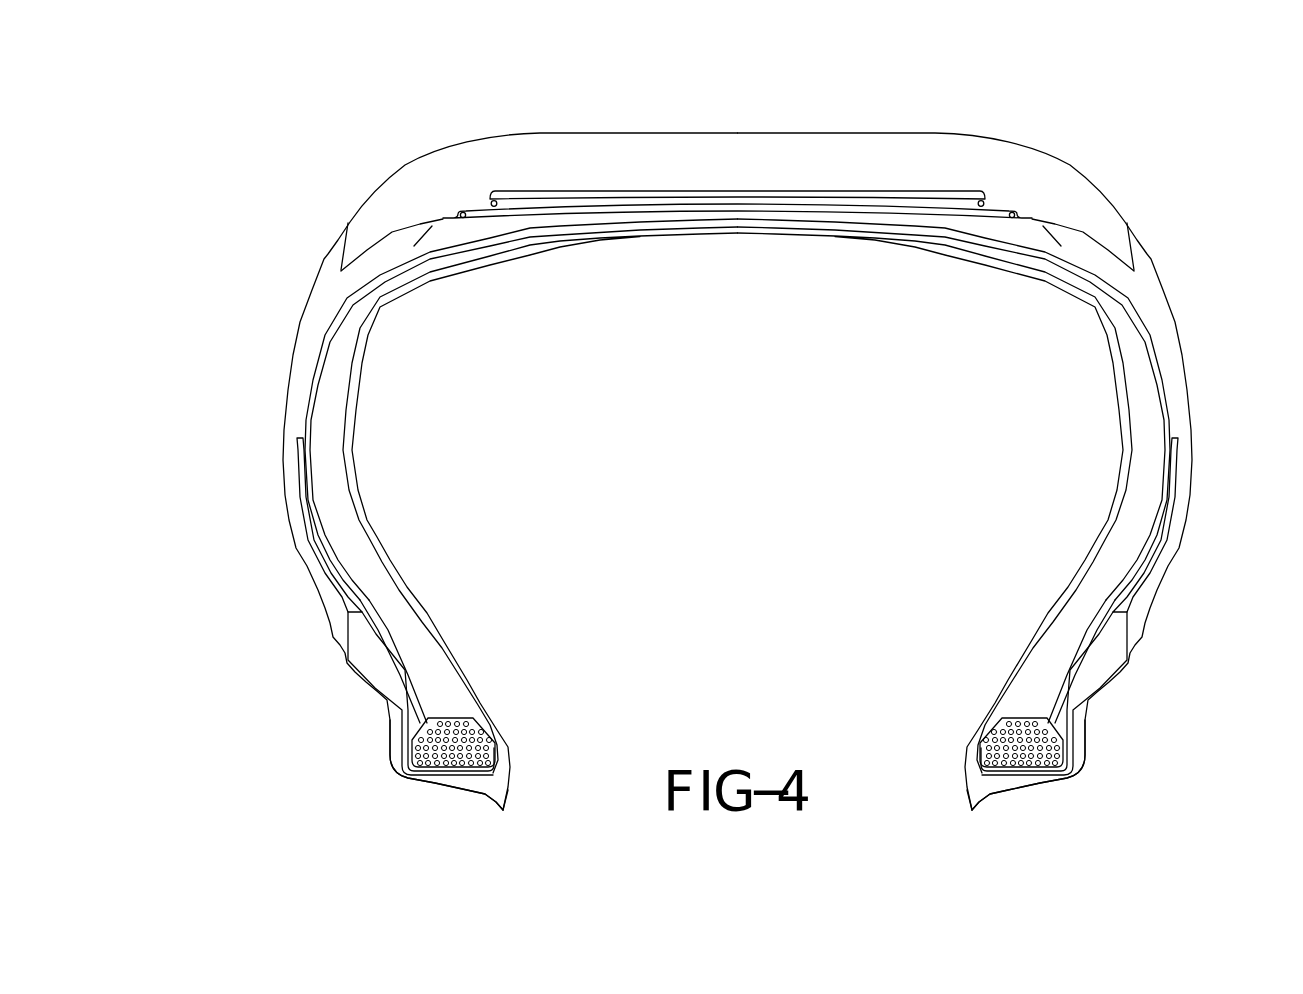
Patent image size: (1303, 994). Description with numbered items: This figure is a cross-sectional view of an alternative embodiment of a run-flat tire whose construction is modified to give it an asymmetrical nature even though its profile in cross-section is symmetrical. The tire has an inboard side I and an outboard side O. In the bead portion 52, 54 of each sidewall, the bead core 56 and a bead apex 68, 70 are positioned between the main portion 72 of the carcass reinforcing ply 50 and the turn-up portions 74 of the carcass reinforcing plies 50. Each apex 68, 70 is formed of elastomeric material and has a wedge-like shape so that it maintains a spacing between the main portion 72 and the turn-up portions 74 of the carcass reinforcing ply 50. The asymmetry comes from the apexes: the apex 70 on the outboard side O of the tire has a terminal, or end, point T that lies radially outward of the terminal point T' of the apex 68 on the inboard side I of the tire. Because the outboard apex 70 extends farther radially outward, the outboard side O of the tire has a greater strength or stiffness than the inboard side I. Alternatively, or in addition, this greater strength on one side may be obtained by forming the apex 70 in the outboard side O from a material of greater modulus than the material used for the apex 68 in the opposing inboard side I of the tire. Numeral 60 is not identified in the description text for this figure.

The carcass reinforcing ply 50 is at (342, 307).
The bead portion 52 is at (942, 712).
The bead portion 54 is at (532, 712).
The bead core 56 is at (462, 740).
The carcass ply 60 is at (340, 367).
The bead apex 68 is at (1075, 638).
The bead apex 70 is at (400, 638).
The main portion 72 is at (308, 400).
The turn-up portion 74 is at (315, 535).
The terminal point T is at (293, 525).
The terminal point T' is at (1179, 525).
The outboard side O is at (370, 126).
The inboard side I is at (1105, 126).